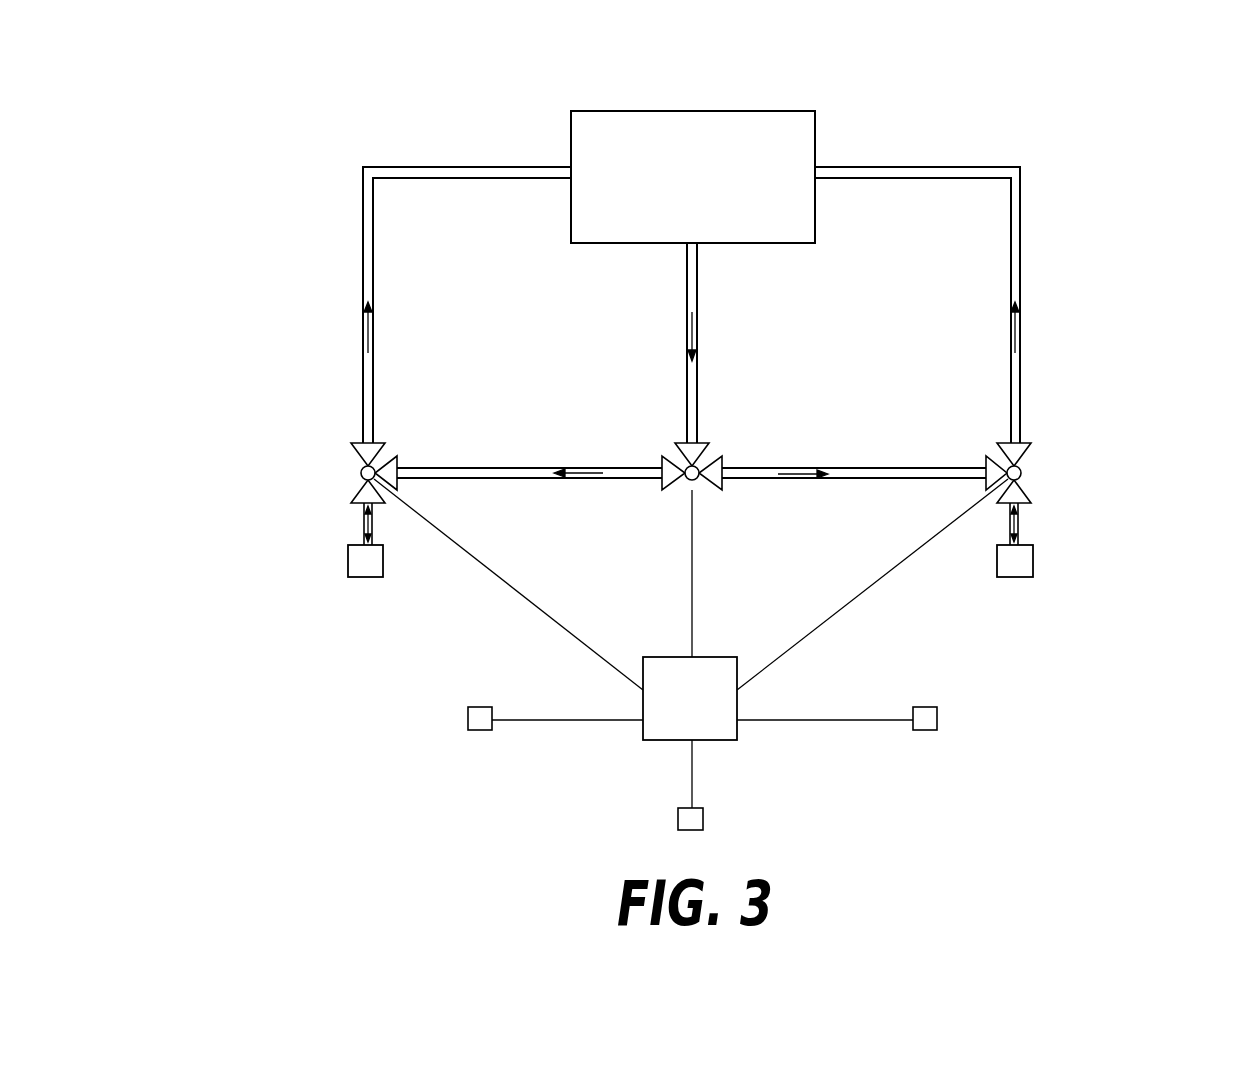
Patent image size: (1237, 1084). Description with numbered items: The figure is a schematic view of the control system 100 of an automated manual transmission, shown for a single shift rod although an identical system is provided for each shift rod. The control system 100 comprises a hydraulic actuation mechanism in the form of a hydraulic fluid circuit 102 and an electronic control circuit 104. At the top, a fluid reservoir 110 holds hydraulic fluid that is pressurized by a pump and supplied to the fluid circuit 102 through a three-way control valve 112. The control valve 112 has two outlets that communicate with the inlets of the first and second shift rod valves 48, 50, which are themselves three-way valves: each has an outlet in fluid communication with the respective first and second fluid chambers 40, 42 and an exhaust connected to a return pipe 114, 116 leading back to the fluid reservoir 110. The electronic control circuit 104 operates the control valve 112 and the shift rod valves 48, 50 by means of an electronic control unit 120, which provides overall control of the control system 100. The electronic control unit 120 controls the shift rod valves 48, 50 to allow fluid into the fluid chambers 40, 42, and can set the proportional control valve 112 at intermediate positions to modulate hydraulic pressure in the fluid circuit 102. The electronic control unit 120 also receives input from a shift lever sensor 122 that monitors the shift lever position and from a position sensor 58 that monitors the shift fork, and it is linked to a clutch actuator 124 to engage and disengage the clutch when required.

The control system 100 is at (316, 647).
The hydraulic fluid circuit 102 is at (1074, 180).
The electronic control circuit 104 is at (934, 787).
The fluid reservoir 110 is at (815, 128).
The three-way control valve 112 is at (725, 462).
The return pipe 114 is at (363, 286).
The return pipe 116 is at (1021, 285).
The electronic control unit 120 is at (713, 657).
The shift lever sensor 122 is at (937, 710).
The clutch actuator 124 is at (703, 815).
The first fluid chamber 40 is at (348, 565).
The second fluid chamber 42 is at (1033, 560).
The first shift rod valve 48 is at (360, 480).
The second shift rod valve 50 is at (1022, 480).
The position sensor 58 is at (468, 712).